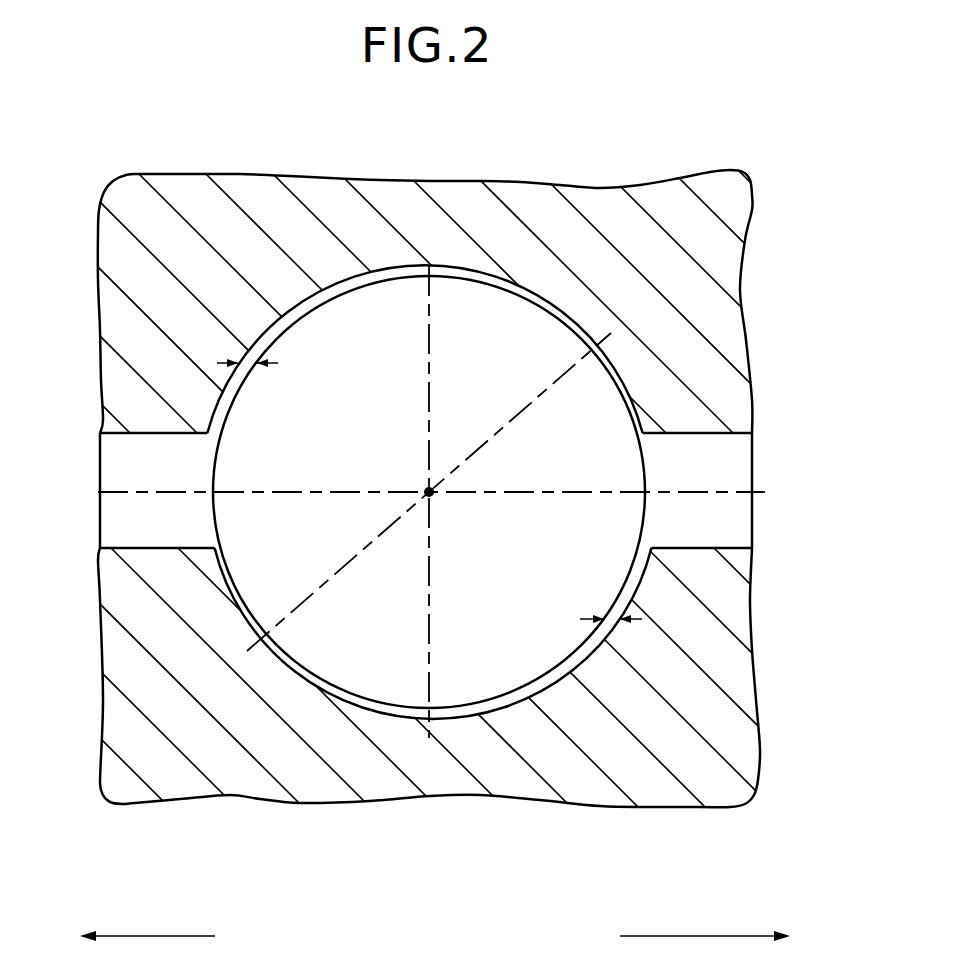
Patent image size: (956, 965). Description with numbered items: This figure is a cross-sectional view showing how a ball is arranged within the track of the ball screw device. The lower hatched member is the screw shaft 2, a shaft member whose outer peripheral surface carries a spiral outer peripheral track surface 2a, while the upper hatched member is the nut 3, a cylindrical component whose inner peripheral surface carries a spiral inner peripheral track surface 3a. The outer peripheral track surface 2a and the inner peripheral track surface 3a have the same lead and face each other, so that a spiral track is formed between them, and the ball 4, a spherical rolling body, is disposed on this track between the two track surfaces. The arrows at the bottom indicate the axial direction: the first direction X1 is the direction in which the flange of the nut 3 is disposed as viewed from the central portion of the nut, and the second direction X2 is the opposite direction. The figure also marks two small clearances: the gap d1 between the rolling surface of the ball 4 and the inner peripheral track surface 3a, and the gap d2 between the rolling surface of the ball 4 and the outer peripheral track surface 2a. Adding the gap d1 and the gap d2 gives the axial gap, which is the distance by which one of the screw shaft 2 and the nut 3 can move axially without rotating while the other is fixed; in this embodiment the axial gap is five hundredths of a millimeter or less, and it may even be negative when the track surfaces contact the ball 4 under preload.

The screw shaft 2 is at (212, 755).
The outer peripheral track surface 2a is at (498, 705).
The nut 3 is at (336, 210).
The inner peripheral track surface 3a is at (360, 282).
The ball 4 is at (485, 310).
The gap d1 is at (250, 355).
The gap d2 is at (613, 627).
The first direction X1 is at (705, 948).
The second direction X2 is at (147, 948).